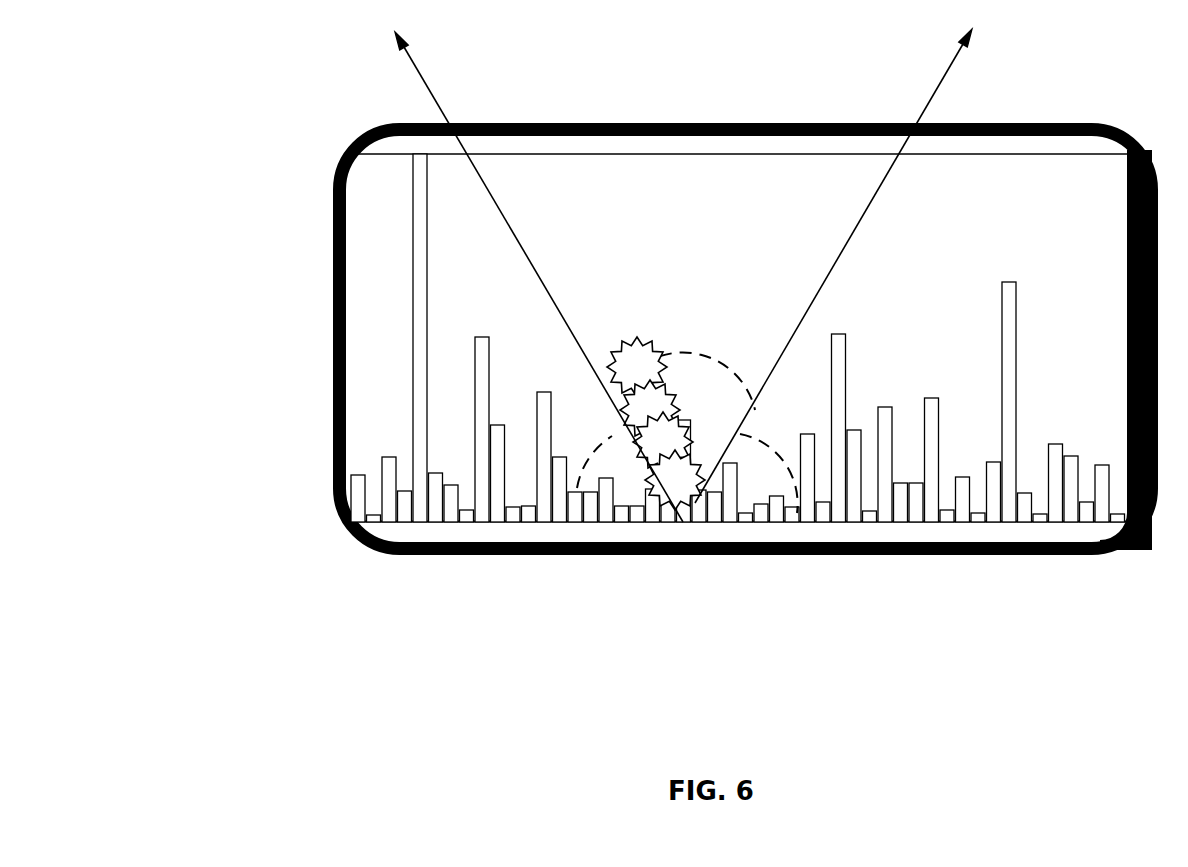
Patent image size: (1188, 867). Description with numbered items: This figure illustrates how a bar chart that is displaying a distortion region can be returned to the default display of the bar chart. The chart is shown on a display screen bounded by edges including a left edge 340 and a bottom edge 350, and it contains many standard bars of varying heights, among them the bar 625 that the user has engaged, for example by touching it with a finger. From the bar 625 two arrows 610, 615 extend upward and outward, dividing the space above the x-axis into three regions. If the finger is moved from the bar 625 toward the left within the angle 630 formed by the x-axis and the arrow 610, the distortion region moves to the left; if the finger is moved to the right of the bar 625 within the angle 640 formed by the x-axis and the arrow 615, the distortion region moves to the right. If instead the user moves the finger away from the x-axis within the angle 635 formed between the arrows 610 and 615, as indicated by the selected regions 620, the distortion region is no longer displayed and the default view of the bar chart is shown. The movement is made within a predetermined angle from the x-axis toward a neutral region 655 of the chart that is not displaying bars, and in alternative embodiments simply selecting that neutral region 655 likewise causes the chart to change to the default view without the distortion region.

The left edge 340 is at (330, 377).
The bottom edge 350 is at (895, 555).
The arrow 610 is at (426, 87).
The arrow 615 is at (940, 80).
The selected regions 620 is at (636, 352).
The bar 625 is at (688, 497).
The angle 630 is at (598, 447).
The angle 635 is at (697, 353).
The angle 640 is at (766, 443).
The neutral region 655 is at (953, 227).